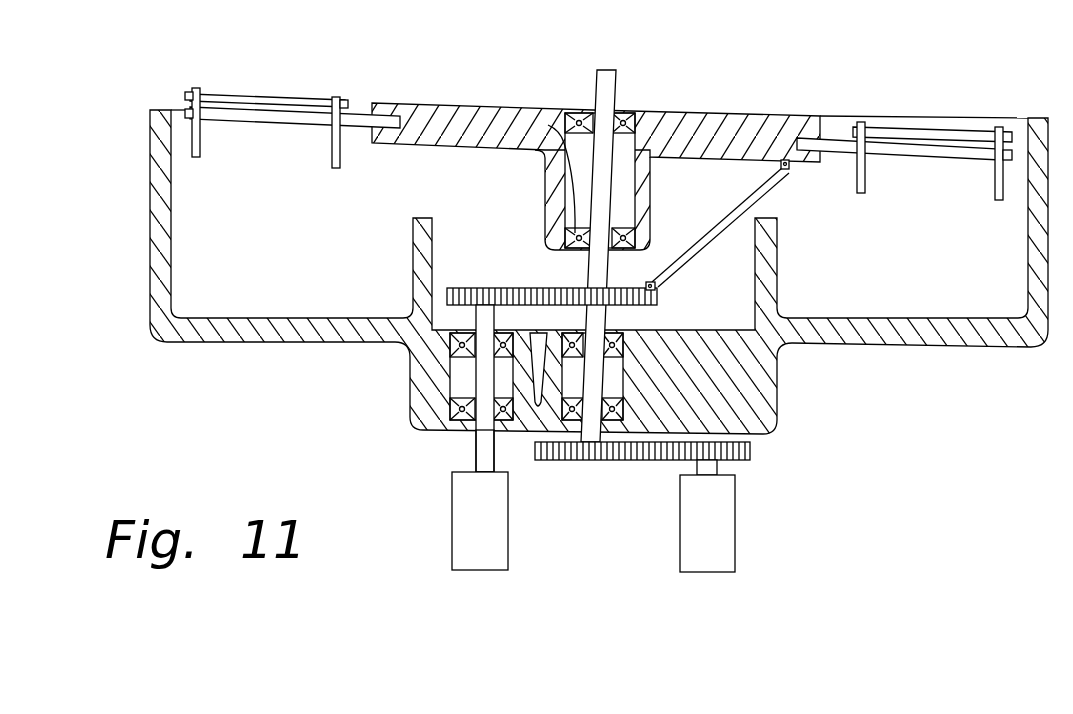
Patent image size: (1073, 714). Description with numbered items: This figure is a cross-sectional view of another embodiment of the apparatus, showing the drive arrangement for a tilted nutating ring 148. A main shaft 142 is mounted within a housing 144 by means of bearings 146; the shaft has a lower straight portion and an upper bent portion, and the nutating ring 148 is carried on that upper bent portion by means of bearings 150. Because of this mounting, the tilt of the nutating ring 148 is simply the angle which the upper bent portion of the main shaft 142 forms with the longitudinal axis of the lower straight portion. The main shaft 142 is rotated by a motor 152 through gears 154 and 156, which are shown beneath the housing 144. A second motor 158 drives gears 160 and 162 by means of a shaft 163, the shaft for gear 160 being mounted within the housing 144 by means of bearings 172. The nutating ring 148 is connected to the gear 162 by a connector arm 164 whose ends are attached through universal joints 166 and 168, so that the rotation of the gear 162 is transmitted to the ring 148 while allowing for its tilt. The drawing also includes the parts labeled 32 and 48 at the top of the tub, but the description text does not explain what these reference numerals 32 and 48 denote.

The tie rod 32 is at (255, 126).
The clamp bolt assembly 48 is at (268, 95).
The main shaft 142 is at (582, 263).
The housing 144 is at (777, 387).
The bearings 146 is at (617, 363).
The nutating ring 148 is at (448, 103).
The bearings 150 is at (563, 146).
The motor 152 is at (725, 523).
The gear 154 is at (753, 453).
The gear 156 is at (575, 453).
The second motor 158 is at (460, 516).
The gear 160 is at (458, 288).
The gear 162 is at (567, 292).
The shaft 163 is at (473, 456).
The connector arm 164 is at (745, 197).
The universal joint 166 is at (790, 177).
The universal joint 168 is at (656, 289).
The bearings 172 is at (462, 397).